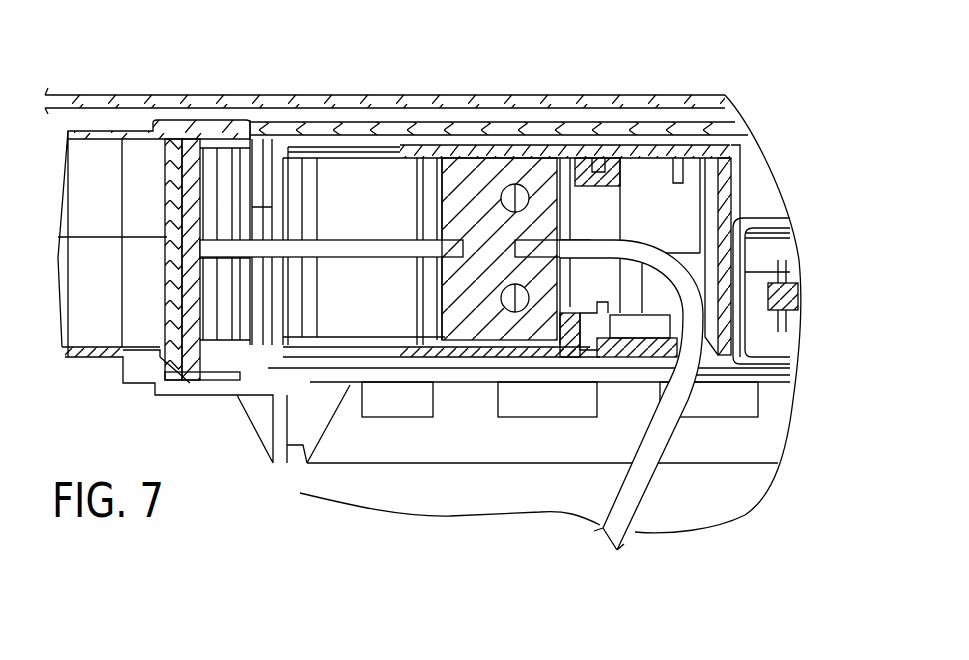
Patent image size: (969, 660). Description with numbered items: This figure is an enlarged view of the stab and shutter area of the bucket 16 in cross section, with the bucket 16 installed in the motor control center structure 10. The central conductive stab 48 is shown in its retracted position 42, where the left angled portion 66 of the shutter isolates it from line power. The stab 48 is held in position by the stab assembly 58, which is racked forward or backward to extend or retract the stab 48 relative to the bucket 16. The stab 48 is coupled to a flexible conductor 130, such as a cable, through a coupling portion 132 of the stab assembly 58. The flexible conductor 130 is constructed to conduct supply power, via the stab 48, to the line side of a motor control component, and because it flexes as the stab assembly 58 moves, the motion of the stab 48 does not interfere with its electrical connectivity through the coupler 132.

The motor control center structure 10 is at (545, 100).
The retracted position 42 is at (369, 128).
The left angled portion of shutter 66 is at (213, 307).
The stab assembly 58 is at (754, 184).
The stab 48 is at (355, 280).
The coupling portion 132 is at (473, 297).
The flexible conductor 130 is at (629, 498).
The bucket 16 is at (828, 400).